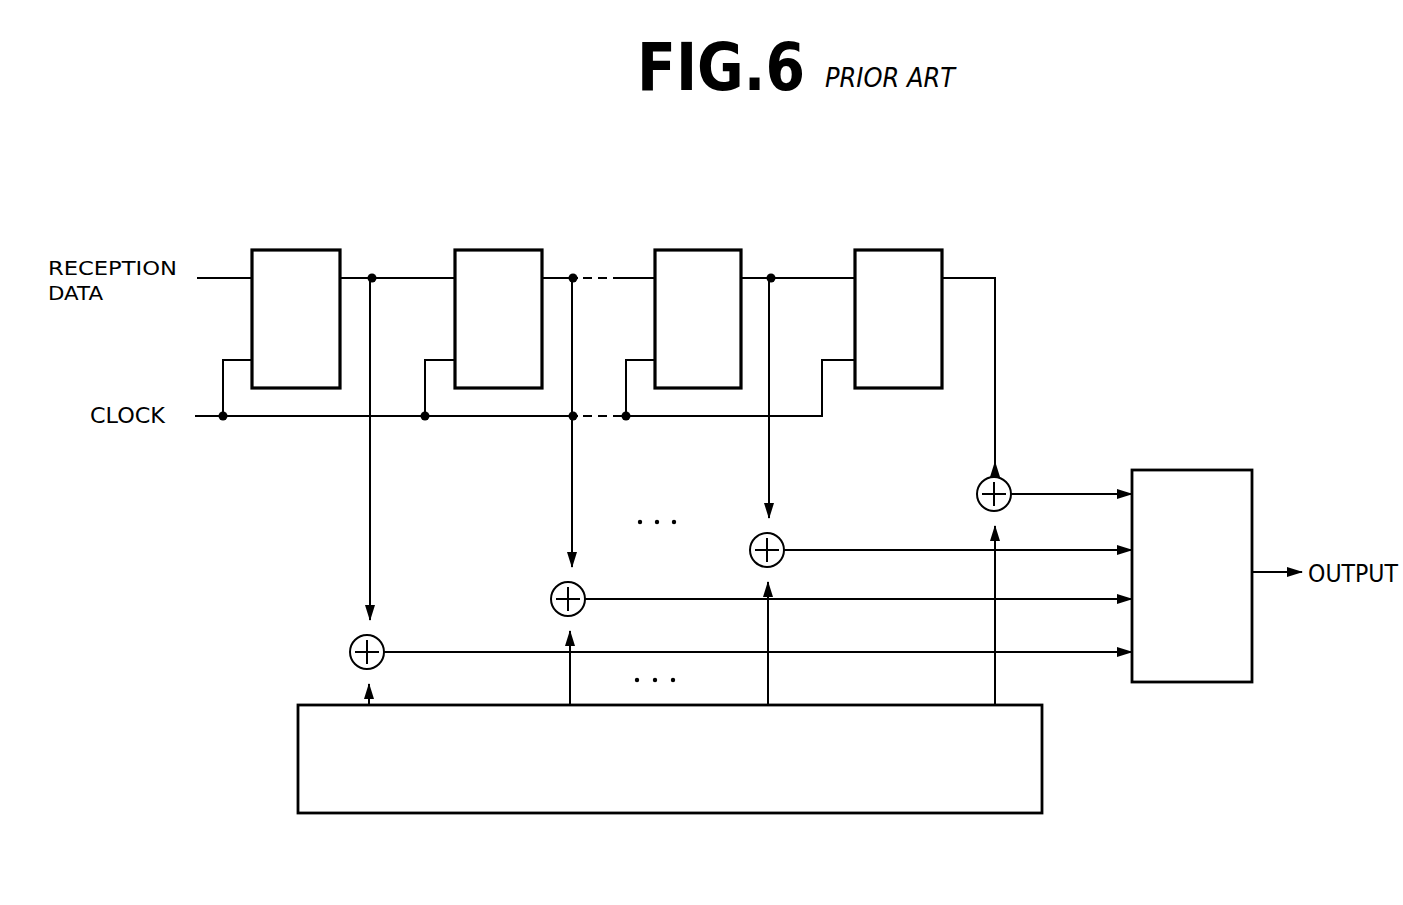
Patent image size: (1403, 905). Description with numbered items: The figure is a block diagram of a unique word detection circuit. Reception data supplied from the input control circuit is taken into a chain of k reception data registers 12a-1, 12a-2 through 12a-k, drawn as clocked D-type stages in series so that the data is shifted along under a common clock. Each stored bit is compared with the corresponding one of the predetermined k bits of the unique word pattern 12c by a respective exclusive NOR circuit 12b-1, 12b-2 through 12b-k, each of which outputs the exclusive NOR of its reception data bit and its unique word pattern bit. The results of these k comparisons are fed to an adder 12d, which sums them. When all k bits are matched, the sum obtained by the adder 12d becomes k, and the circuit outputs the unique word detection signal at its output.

The reception data register 12a-1 is at (320, 250).
The reception data register 12a-2 is at (518, 250).
The reception data register 12a-k is at (921, 250).
The exclusive NOR circuit 12b-1 is at (382, 637).
The exclusive NOR circuit 12b-2 is at (583, 588).
The exclusive NOR circuit 12b-k is at (1009, 481).
The unique word pattern 12c is at (352, 813).
The adder 12d is at (1207, 470).